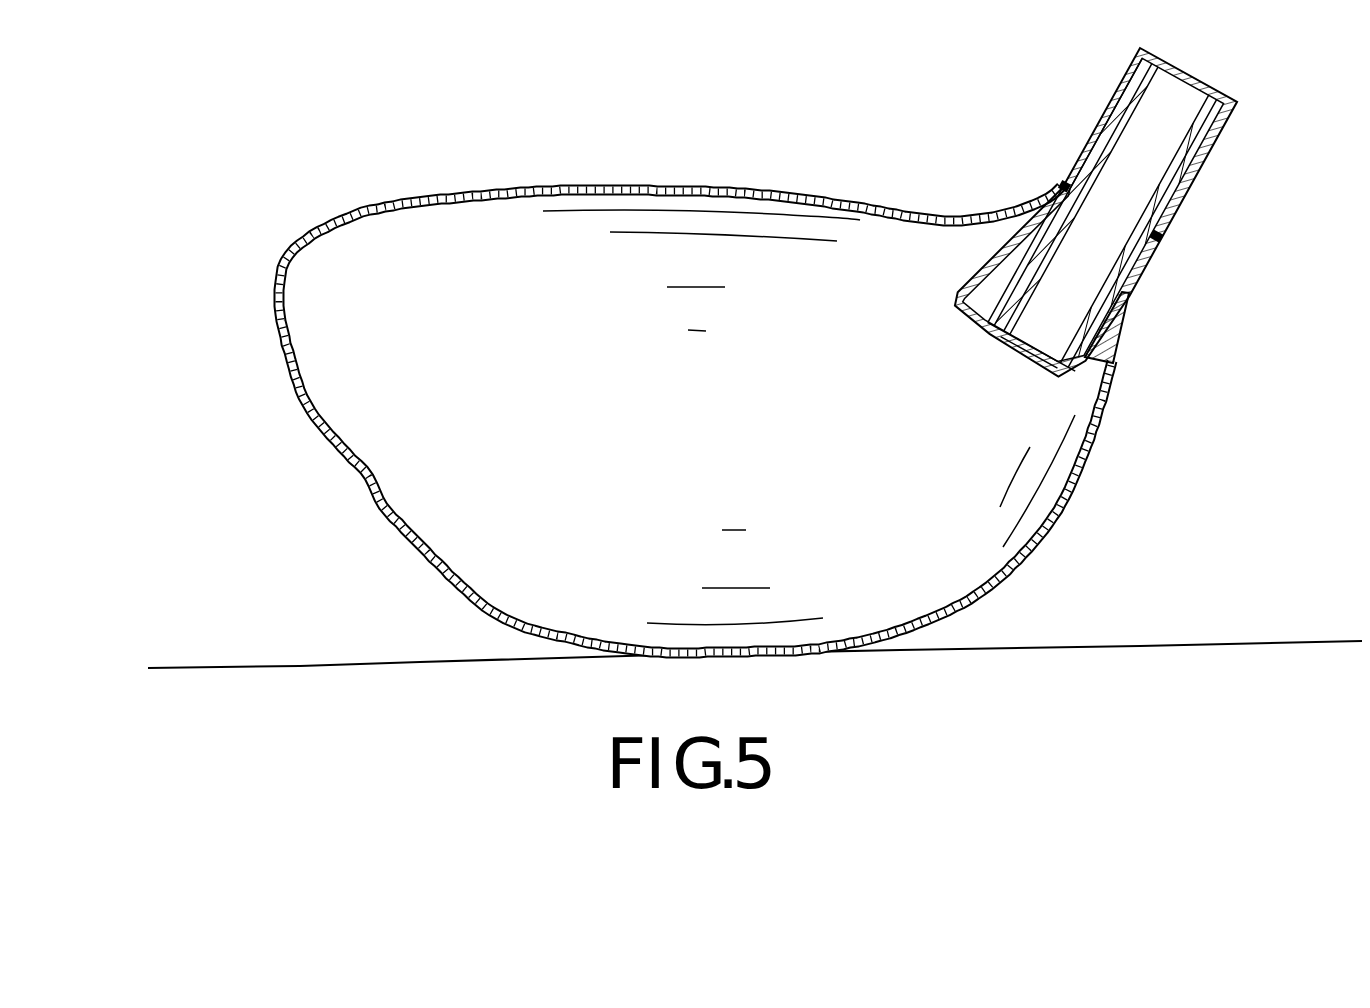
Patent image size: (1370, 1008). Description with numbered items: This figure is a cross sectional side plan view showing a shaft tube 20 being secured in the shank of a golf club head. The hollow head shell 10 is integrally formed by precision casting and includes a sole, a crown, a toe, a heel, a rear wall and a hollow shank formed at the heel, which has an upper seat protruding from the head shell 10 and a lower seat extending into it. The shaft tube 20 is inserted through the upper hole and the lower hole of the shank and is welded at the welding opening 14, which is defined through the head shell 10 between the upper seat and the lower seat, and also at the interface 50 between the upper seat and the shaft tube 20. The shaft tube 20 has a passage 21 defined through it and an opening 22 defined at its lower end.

The head shell 10 is at (1088, 468).
The welding opening 14 is at (1130, 287).
The shaft tube 20 is at (1178, 203).
The passage 21 is at (1170, 163).
The opening 22 is at (1017, 343).
The interface 50 is at (1157, 233).